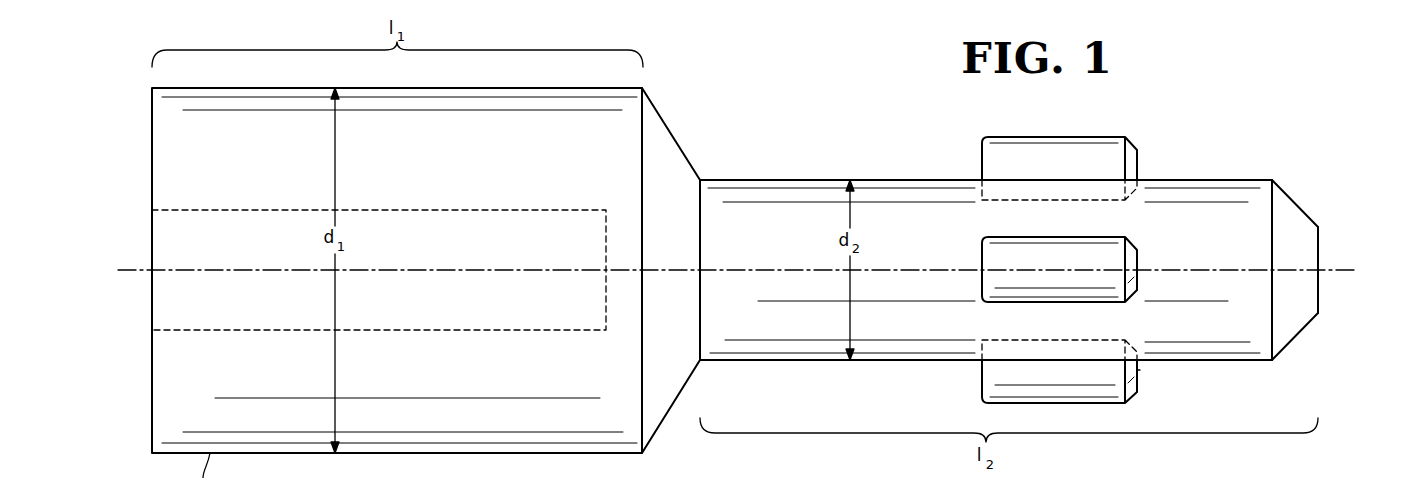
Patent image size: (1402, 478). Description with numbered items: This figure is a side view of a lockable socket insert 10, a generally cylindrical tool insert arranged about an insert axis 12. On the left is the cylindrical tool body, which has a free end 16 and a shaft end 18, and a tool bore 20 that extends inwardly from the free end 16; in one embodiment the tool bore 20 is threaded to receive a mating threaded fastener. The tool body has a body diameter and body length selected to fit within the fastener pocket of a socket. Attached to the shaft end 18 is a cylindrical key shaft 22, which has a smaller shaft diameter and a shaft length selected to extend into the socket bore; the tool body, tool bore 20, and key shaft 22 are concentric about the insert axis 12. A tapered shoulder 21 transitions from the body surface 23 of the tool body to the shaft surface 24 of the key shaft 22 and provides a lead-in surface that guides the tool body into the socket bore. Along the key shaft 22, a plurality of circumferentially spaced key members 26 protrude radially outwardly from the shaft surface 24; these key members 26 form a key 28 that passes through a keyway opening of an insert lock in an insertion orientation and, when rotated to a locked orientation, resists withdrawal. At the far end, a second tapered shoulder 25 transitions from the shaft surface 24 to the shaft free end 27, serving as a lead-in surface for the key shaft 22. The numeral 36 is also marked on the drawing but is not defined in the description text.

The lockable socket insert 10 is at (812, 138).
The insert axis 12 is at (1346, 268).
The free end 16 is at (152, 182).
The shaft end 18 is at (700, 180).
The tool bore 20 is at (495, 212).
The tapered shoulder 21 is at (655, 397).
The cylindrical key shaft 22 is at (890, 180).
The body surface 23 is at (627, 131).
The shaft surface 24 is at (1223, 212).
The tapered shoulder 25 is at (1283, 216).
The circumferentially spaced key members 26 is at (1140, 370).
The shaft free end 27 is at (1318, 300).
The key 28 is at (781, 409).
The second length region 36 is at (1166, 424).